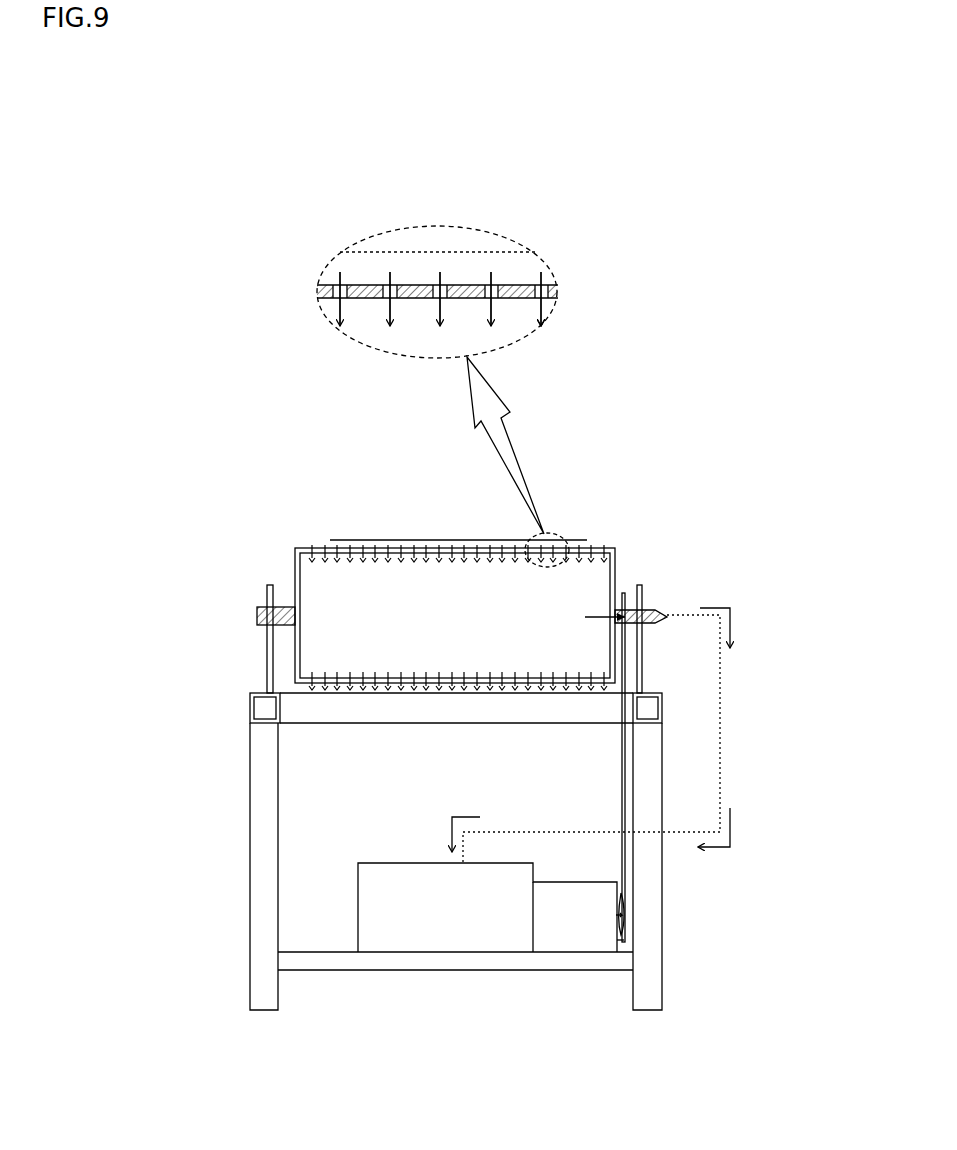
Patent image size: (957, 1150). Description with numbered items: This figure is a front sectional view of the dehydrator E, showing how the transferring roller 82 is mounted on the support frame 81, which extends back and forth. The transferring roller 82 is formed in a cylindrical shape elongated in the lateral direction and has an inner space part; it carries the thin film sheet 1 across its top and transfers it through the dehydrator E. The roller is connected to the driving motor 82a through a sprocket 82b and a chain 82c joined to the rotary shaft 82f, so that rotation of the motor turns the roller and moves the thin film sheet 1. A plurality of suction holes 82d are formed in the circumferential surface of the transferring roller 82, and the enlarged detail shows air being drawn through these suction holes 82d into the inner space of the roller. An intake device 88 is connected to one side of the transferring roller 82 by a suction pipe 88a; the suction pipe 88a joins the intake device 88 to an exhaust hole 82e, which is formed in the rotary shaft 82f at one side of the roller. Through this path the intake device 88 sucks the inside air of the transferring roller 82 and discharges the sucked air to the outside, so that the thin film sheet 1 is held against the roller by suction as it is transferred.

The thin film sheet 1 is at (428, 250).
The support frame 81 is at (250, 790).
The transferring roller 82 is at (510, 287).
The driving motor 82a is at (620, 942).
The sprocket 82b is at (623, 593).
The chain 82c is at (628, 870).
The suction holes 82d is at (398, 300).
The exhaust hole 82e is at (667, 622).
The rotary shaft 82f is at (268, 606).
The intake device 88 is at (358, 908).
The suction pipe 88a is at (720, 727).
The dehydrator E is at (183, 615).